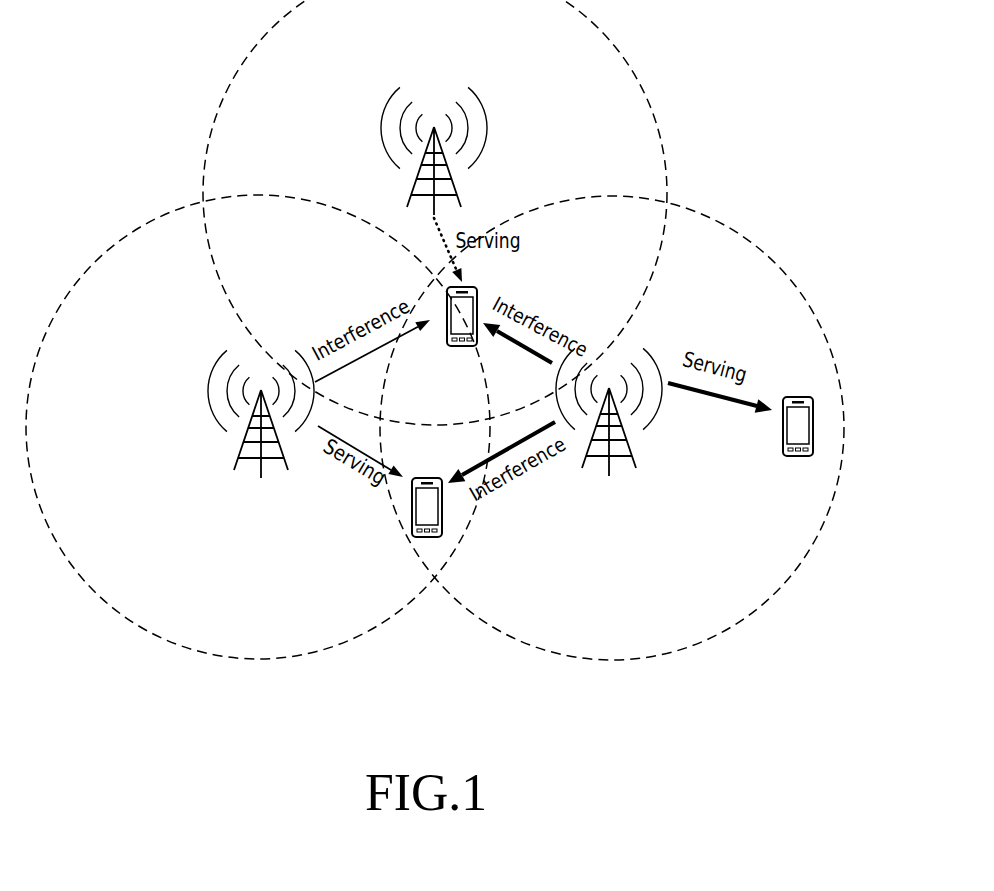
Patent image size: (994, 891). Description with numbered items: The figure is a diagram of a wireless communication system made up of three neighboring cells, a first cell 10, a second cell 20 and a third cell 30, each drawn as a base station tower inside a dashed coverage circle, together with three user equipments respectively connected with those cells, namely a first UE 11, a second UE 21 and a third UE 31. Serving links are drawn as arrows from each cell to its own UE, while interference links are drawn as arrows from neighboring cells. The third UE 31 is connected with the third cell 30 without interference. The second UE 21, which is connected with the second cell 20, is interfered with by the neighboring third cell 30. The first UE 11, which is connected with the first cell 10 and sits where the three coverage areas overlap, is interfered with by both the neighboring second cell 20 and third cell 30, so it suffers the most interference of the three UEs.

The Cell 1 10 is at (434, 56).
The UE 1 11 is at (477, 290).
The Cell 2 20 is at (262, 518).
The UE 2 21 is at (428, 476).
The Cell 3 30 is at (609, 512).
The UE 3 31 is at (798, 395).